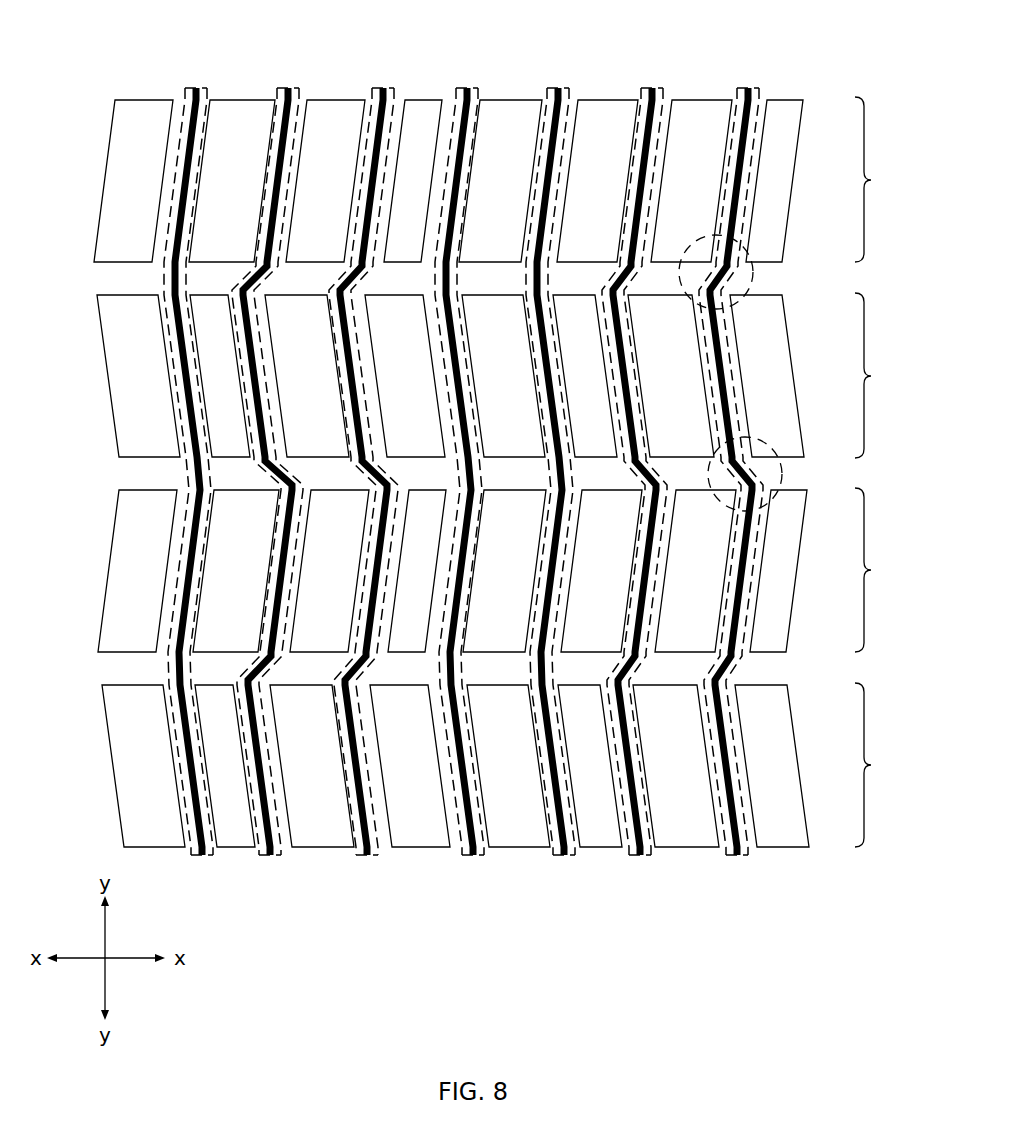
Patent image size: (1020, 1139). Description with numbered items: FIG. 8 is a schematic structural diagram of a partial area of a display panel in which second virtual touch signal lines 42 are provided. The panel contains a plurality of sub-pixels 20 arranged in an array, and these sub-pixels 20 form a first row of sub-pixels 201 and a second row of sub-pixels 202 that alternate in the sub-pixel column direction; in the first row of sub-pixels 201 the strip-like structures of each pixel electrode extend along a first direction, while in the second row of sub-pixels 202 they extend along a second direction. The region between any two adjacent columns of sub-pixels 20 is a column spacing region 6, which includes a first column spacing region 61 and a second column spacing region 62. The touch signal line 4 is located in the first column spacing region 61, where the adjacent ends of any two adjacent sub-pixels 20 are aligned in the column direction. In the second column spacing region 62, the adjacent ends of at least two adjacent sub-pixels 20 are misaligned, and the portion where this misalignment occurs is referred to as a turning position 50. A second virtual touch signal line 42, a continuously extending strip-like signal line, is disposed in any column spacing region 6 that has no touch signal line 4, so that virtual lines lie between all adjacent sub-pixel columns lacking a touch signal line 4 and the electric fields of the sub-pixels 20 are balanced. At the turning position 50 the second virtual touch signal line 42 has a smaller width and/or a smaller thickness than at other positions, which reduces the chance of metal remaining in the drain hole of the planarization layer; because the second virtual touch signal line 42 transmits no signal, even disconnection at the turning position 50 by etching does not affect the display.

The sub-pixel 20 is at (106, 590).
The touch signal line 4 is at (199, 96).
The second virtual touch signal line 42 is at (291, 96).
The column spacing region 6 is at (454, 492).
The first column spacing region 61 is at (182, 96).
The second column spacing region 62 is at (277, 856).
The turning position 50 is at (753, 277).
The first row of sub-pixels 201 is at (886, 374).
The second row of sub-pixels 202 is at (886, 570).